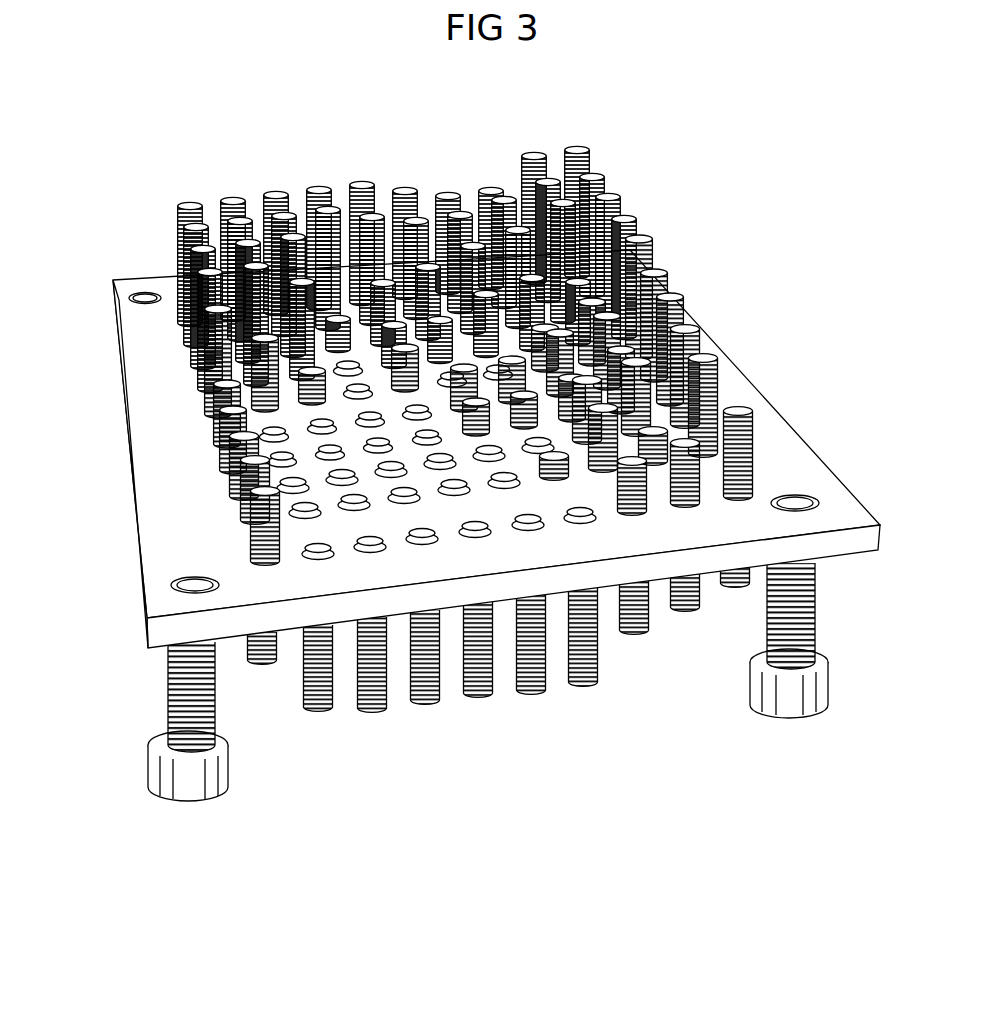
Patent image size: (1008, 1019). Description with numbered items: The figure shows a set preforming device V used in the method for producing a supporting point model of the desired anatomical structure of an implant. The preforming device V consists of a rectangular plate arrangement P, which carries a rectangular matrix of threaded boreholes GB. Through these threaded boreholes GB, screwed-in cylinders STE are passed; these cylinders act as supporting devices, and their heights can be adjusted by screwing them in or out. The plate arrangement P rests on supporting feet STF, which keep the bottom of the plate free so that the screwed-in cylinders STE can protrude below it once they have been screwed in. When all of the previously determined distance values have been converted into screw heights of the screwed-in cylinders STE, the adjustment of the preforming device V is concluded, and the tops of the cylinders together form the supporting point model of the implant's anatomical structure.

The preforming device V is at (467, 473).
The plate arrangement P is at (836, 510).
The screwed-in cylinders STE is at (746, 412).
The threaded boreholes GB is at (374, 557).
The supporting feet STF is at (800, 606).